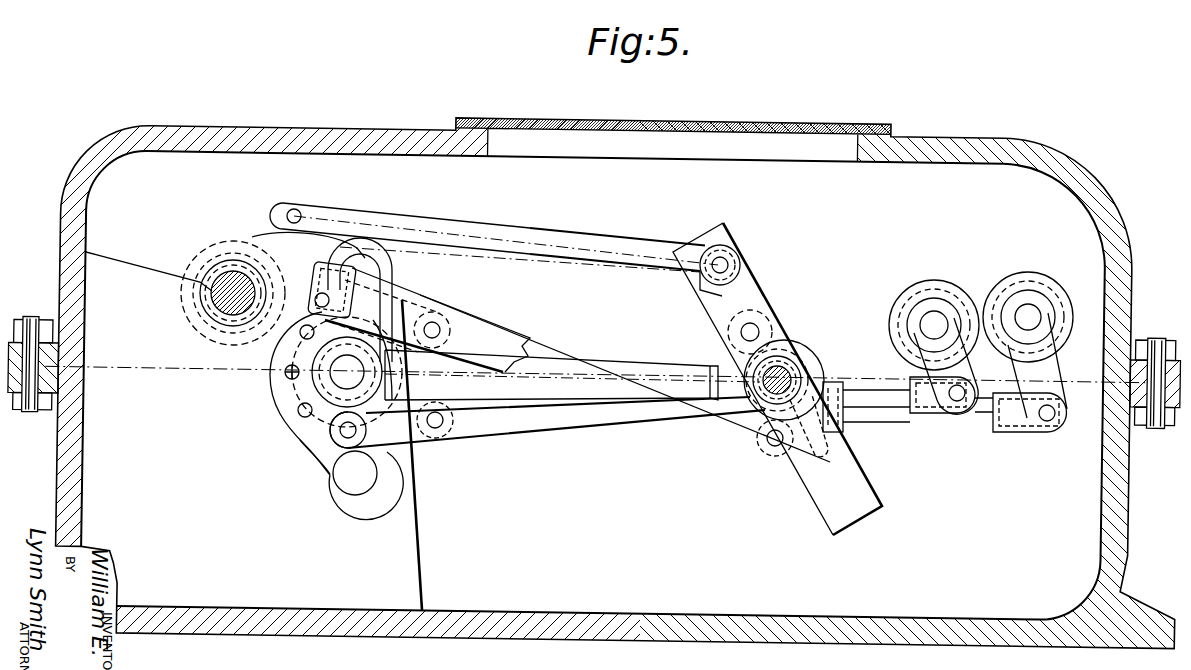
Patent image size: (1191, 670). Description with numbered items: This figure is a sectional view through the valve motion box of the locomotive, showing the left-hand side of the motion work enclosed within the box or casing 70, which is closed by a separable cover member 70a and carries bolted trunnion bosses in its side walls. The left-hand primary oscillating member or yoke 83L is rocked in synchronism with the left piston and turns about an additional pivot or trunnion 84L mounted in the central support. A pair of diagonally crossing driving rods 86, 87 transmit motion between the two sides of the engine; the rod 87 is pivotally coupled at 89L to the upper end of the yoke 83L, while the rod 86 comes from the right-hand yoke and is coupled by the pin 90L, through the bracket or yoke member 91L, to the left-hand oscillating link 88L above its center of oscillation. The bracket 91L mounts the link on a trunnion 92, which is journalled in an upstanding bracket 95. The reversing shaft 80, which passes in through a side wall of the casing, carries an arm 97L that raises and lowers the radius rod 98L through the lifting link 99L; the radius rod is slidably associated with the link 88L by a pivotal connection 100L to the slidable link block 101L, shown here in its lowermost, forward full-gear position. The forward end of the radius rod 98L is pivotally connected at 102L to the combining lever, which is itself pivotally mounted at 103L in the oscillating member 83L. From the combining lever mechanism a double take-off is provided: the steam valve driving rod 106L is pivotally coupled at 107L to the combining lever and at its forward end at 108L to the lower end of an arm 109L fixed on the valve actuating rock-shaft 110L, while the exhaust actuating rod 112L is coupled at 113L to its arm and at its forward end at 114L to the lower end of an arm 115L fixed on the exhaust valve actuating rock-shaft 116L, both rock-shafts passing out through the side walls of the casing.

The box or casing 70 is at (66, 481).
The separable portion or cover member 70a is at (37, 227).
The reversing shaft 80 is at (212, 293).
The left-hand primary oscillating member or yoke 83L is at (825, 503).
The pivot or trunnion 84L is at (783, 372).
The driving rod 86 is at (496, 343).
The driving rod 87 is at (592, 237).
The left-hand oscillating link 88L is at (322, 452).
The pivotal coupling 89L is at (724, 263).
The pin 90L is at (316, 298).
The bracket or yoke member 91L is at (272, 380).
The trunnion 92 is at (335, 377).
The upstanding bracket 95 is at (405, 567).
The arm 97L is at (410, 302).
The radius rod 98L is at (570, 419).
The lifting link 99L is at (437, 385).
The pivotal connection 100L is at (346, 433).
The slidable link block 101L is at (361, 455).
The pivotal connection 102L is at (810, 362).
The pivotal mounting 103L is at (755, 330).
The steam valve driving rod 106L is at (940, 420).
The pivotal coupling 107L is at (808, 435).
The pivotal coupling 108L is at (1047, 416).
The arm 109L is at (1035, 365).
The valve actuating rock-shaft 110L is at (1028, 312).
The actuating rod 112L is at (891, 398).
The pivotal coupling 113L is at (765, 413).
The pivotal coupling 114L is at (958, 396).
The arm 115L is at (948, 367).
The exhaust valve actuating rock-shaft 116L is at (934, 320).